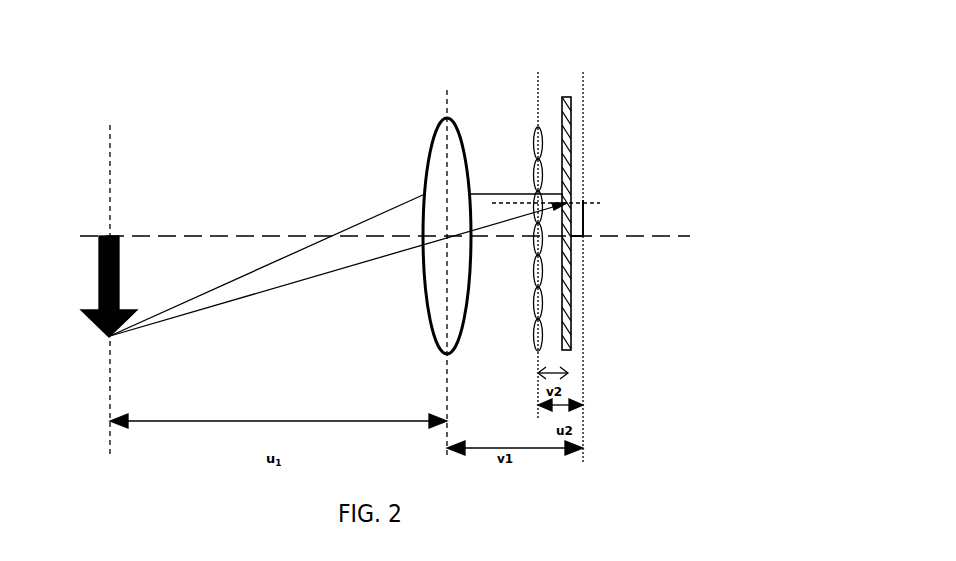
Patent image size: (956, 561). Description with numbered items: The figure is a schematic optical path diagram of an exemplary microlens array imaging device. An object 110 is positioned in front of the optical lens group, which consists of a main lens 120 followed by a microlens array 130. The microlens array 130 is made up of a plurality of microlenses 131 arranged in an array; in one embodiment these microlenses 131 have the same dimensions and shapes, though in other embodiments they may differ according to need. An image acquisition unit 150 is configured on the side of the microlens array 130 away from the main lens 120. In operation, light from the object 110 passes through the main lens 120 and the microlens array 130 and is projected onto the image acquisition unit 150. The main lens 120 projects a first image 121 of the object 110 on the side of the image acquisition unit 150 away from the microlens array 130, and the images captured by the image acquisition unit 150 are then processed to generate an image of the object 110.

The object 110 is at (113, 338).
The main lens 120 is at (445, 118).
The microlens array 130 is at (534, 140).
The image acquisition unit 150 is at (562, 110).
The first image 121 is at (583, 203).
The microlens 131 is at (556, 220).